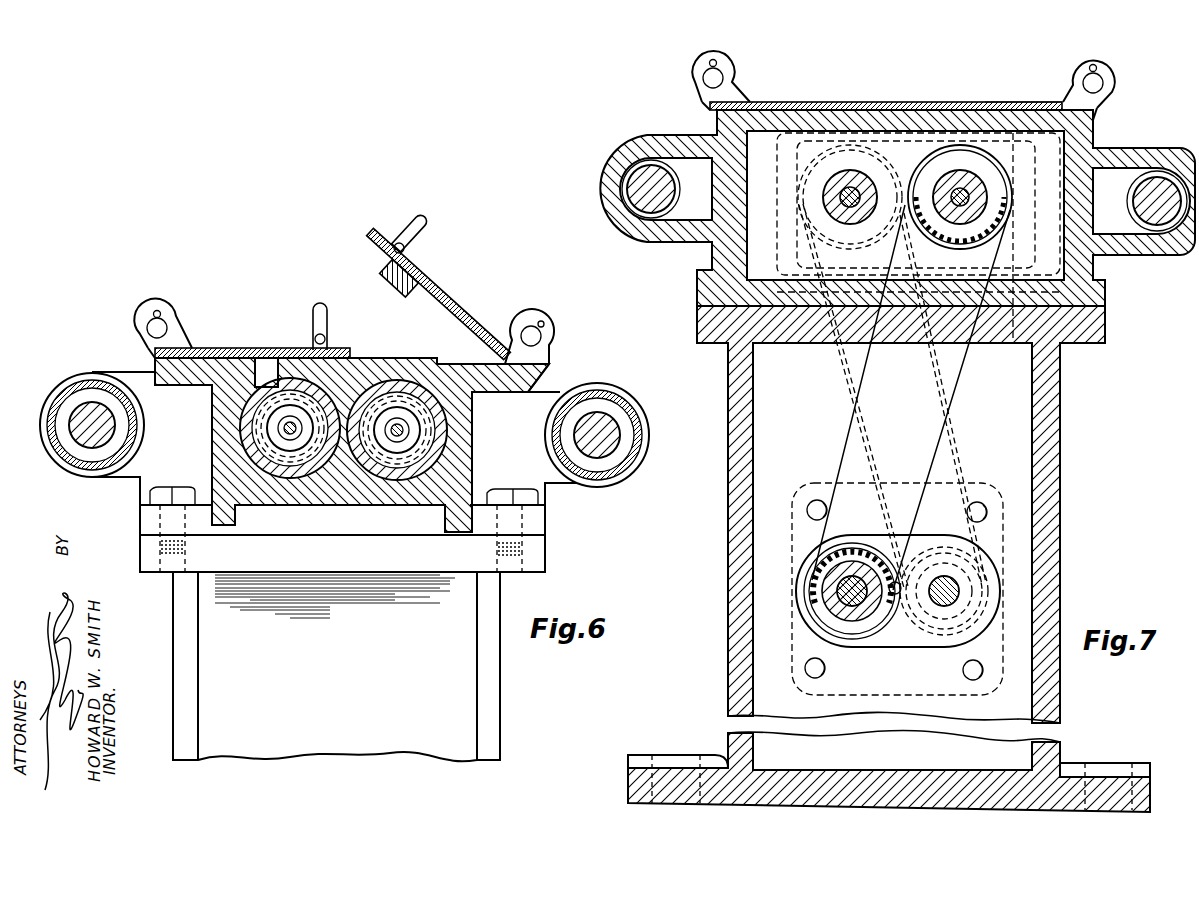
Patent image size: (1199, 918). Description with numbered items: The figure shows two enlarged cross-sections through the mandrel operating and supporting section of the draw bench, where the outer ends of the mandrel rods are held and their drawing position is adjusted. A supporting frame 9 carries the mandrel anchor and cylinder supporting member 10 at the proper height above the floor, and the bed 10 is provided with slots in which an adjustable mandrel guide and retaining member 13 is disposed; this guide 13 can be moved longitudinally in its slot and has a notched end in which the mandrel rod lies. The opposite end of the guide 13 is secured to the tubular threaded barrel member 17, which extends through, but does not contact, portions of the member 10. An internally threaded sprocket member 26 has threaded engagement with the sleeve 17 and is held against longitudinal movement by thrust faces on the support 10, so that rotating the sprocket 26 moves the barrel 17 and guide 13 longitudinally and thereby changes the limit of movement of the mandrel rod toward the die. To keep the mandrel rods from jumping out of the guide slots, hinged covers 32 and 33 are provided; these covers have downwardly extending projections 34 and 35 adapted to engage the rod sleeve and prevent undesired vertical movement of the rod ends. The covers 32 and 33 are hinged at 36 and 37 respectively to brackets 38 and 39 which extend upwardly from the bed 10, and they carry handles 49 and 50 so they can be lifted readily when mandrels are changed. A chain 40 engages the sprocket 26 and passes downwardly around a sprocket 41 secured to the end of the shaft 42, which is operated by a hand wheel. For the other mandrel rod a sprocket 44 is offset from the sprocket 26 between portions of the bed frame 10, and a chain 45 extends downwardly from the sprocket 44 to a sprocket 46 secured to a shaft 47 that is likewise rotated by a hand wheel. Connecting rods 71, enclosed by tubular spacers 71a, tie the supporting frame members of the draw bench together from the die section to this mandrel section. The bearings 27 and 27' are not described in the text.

In FIG. 6, the supporting frame 9 is at (490, 706).
In FIG. 7, the supporting frame 9 is at (1062, 518).
In FIG. 6, the mandrel anchor and cylinder supporting member 10 is at (143, 474).
In FIG. 7, the mandrel anchor and cylinder supporting member 10 is at (1088, 296).
In FIG. 6, the adjustable mandrel guide and retaining member 13 is at (250, 456).
In FIG. 7, the tubular threaded barrel member 17 is at (856, 188).
In FIG. 7, the internally threaded sprocket member 26 is at (915, 125).
In FIG. 7, the bearing 27 is at (818, 197).
In FIG. 6, the bearing 27' is at (294, 429).
In FIG. 6, the hinged cover 32 is at (245, 349).
In FIG. 7, the hinged cover 32 is at (793, 103).
In FIG. 6, the hinged cover 33 is at (450, 283).
In FIG. 7, the hinged cover 33 is at (985, 103).
In FIG. 6, the downwardly extending projection 34 is at (268, 372).
In FIG. 6, the downwardly extending projection 35 is at (404, 297).
In FIG. 6, the hinge 36 is at (140, 324).
In FIG. 7, the hinge 36 is at (697, 79).
In FIG. 6, the hinge 37 is at (541, 337).
In FIG. 7, the hinge 37 is at (1105, 83).
In FIG. 6, the bracket 38 is at (150, 353).
In FIG. 7, the bracket 38 is at (708, 112).
In FIG. 6, the bracket 39 is at (540, 368).
In FIG. 7, the bracket 39 is at (1100, 114).
In FIG. 7, the chain 40 is at (960, 468).
In FIG. 7, the sprocket 41 is at (940, 548).
In FIG. 7, the shaft 42 is at (960, 590).
In FIG. 7, the sprocket 44 is at (1000, 200).
In FIG. 7, the chain 45 is at (965, 384).
In FIG. 7, the sprocket 46 is at (820, 572).
In FIG. 7, the shaft 47 is at (840, 592).
In FIG. 6, the handle 49 is at (312, 321).
In FIG. 6, the handle 50 is at (427, 238).
In FIG. 6, the connecting rod 71 is at (84, 442).
In FIG. 7, the connecting rod 71 is at (628, 187).
In FIG. 6, the tubular spacer 71a is at (62, 398).